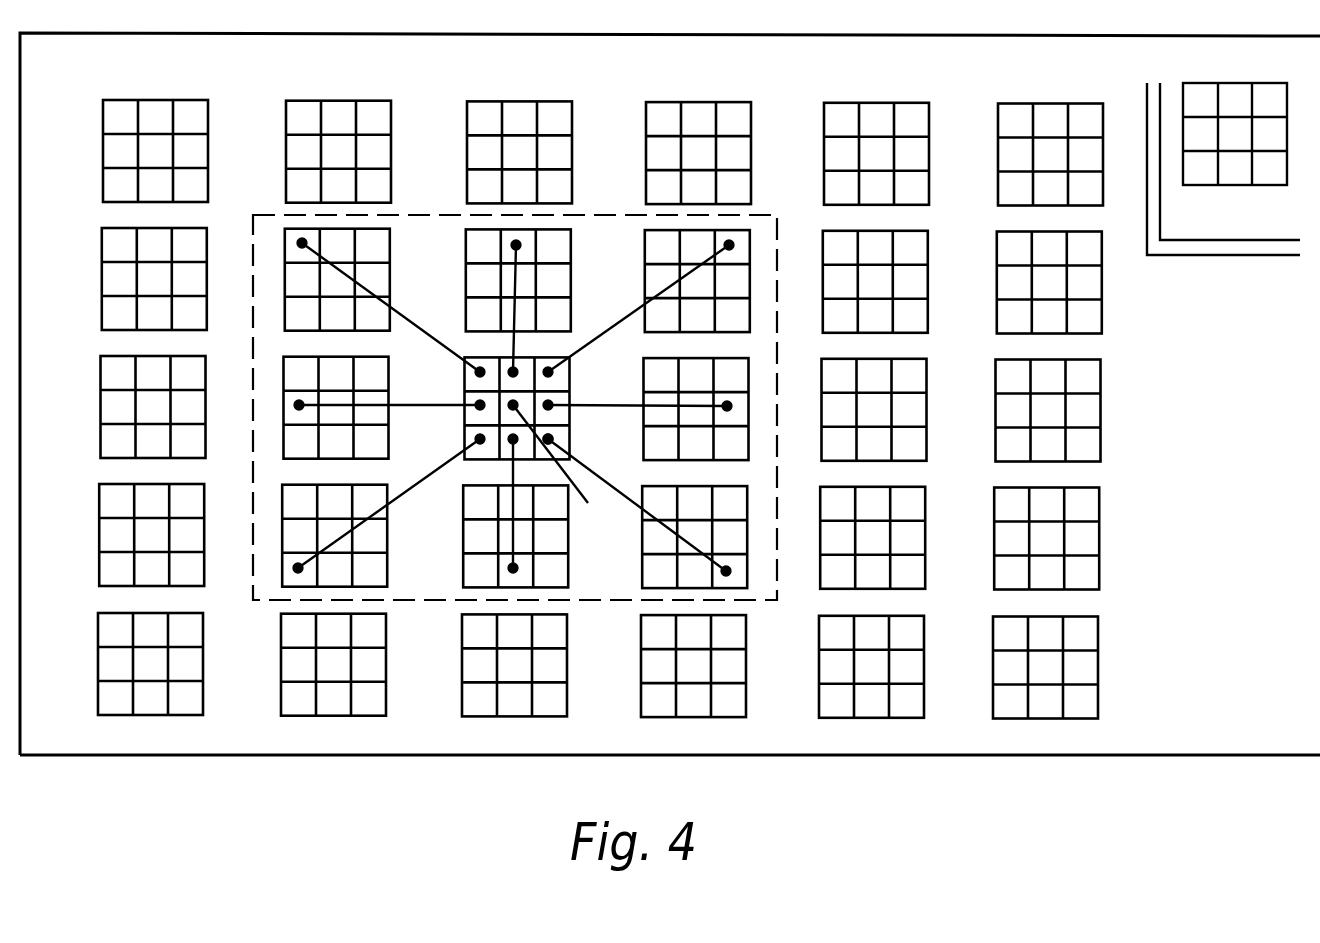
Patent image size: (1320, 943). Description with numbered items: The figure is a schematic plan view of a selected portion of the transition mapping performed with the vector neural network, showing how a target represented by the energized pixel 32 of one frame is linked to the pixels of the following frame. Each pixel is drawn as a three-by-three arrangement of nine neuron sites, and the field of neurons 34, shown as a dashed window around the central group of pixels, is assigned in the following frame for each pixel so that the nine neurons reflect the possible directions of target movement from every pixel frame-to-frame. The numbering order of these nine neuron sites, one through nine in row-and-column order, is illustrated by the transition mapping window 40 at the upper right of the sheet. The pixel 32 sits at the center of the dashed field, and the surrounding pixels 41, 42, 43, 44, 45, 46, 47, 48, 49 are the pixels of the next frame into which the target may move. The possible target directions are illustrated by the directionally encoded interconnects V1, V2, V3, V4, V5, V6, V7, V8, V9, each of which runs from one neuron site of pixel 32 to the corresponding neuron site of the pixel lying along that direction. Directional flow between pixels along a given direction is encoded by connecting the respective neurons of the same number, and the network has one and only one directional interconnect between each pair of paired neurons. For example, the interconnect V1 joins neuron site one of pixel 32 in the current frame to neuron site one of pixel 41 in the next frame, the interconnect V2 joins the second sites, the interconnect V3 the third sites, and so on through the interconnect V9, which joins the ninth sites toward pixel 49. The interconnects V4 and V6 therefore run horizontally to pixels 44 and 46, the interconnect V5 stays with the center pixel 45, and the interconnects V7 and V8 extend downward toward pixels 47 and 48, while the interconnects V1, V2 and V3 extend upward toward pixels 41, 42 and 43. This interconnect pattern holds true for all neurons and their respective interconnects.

The energized pixel 32 is at (568, 438).
The field of neurons 34 is at (250, 468).
The transition mapping window 40 is at (1263, 257).
The pixel 41 is at (392, 282).
The pixel 42 is at (570, 262).
The pixel 43 is at (748, 256).
The pixel 44 is at (284, 372).
The pixel 45 is at (465, 368).
The pixel 46 is at (748, 378).
The pixel 47 is at (282, 570).
The pixel 48 is at (569, 572).
The pixel 49 is at (748, 504).
The directionally encoded interconnect V1 is at (420, 328).
The directionally encoded interconnect V2 is at (515, 345).
The directionally encoded interconnect V3 is at (632, 314).
The directionally encoded interconnect V4 is at (413, 406).
The directionally encoded interconnect V5 is at (559, 466).
The directionally encoded interconnect V6 is at (598, 407).
The directionally encoded interconnect V7 is at (397, 500).
The directionally encoded interconnect V8 is at (512, 470).
The directionally encoded interconnect V9 is at (632, 504).